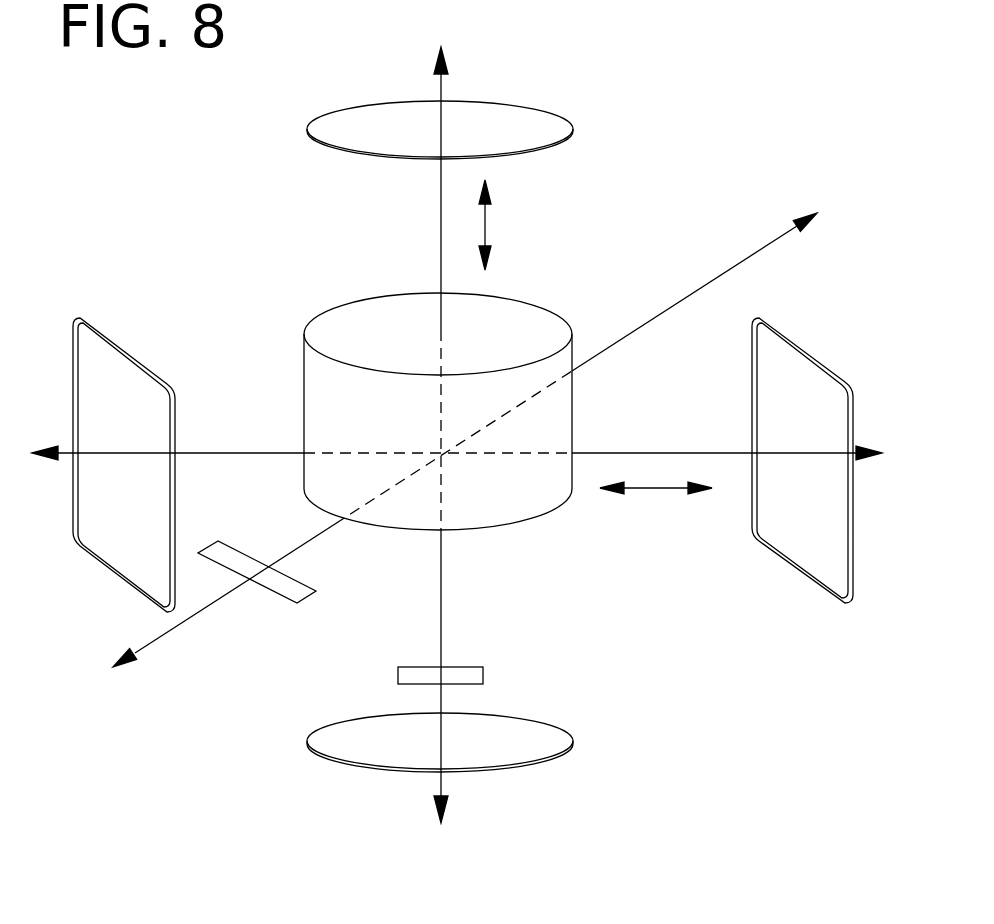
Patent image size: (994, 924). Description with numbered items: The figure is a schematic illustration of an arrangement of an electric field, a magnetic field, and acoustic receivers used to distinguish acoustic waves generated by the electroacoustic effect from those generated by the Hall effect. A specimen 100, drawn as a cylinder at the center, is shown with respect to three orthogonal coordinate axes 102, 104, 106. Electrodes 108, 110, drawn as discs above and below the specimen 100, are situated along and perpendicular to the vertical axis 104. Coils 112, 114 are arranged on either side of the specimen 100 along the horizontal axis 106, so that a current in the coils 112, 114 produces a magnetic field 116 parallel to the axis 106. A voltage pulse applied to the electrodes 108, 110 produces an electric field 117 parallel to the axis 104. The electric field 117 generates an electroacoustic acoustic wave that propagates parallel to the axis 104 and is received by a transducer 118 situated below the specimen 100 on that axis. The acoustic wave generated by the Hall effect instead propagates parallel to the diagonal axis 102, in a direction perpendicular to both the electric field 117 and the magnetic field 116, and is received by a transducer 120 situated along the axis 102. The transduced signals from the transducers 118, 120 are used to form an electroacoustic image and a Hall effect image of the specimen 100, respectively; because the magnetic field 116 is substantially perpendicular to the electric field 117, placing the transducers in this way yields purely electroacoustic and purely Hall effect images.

The specimen 100 is at (310, 338).
The coordinate axis 102 is at (155, 638).
The coordinate axis 104 is at (441, 611).
The coordinate axis 106 is at (668, 453).
The electrode 108 is at (555, 117).
The electrode 110 is at (548, 765).
The coil 112 is at (98, 570).
The coil 114 is at (842, 605).
The magnetic field 116 is at (647, 488).
The electric field 117 is at (485, 228).
The transducer 118 is at (483, 677).
The transducer 120 is at (312, 595).